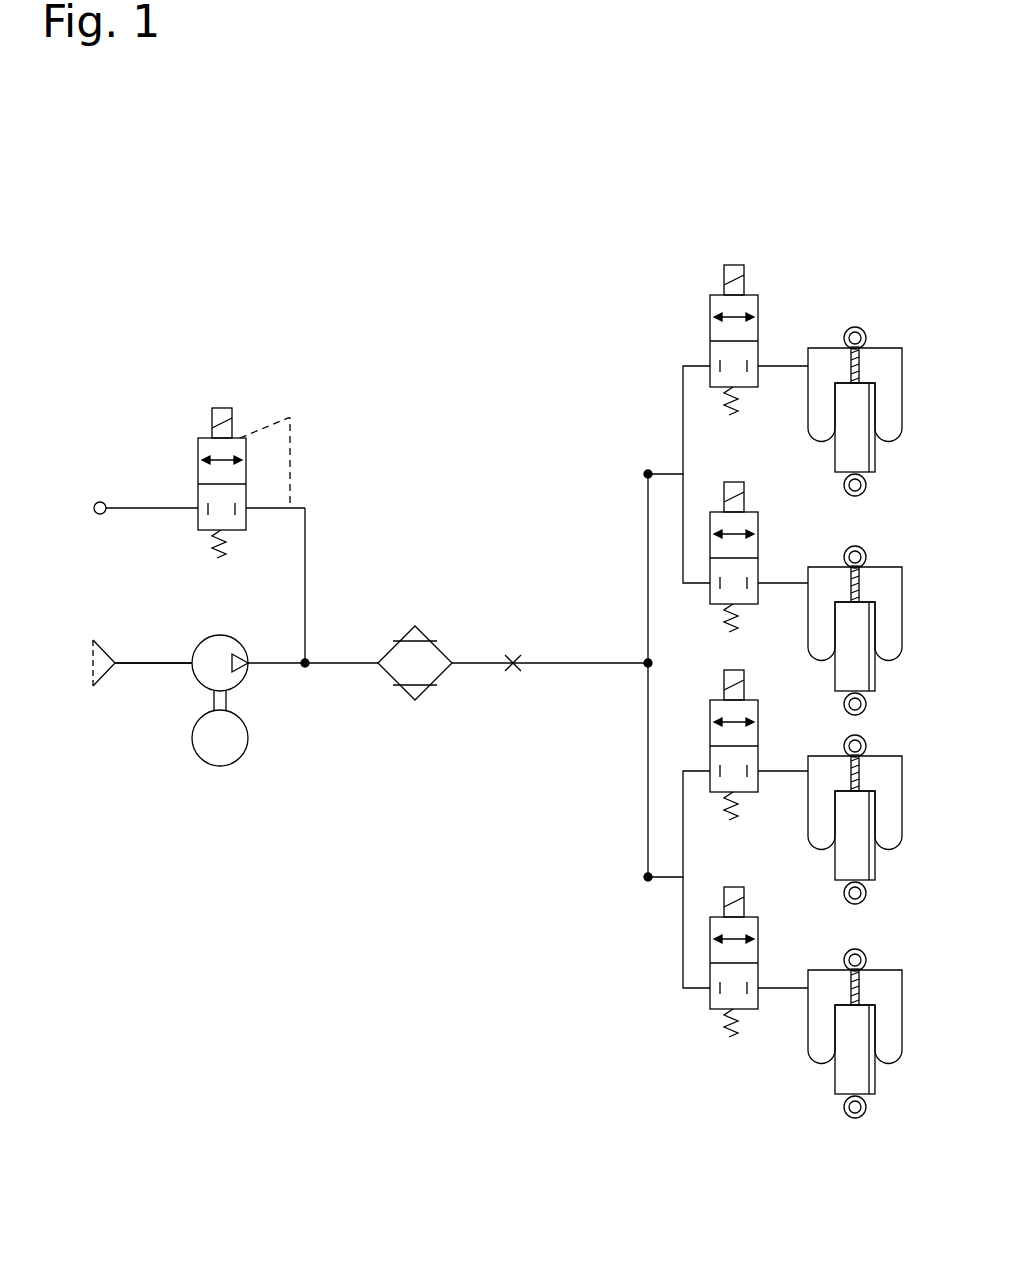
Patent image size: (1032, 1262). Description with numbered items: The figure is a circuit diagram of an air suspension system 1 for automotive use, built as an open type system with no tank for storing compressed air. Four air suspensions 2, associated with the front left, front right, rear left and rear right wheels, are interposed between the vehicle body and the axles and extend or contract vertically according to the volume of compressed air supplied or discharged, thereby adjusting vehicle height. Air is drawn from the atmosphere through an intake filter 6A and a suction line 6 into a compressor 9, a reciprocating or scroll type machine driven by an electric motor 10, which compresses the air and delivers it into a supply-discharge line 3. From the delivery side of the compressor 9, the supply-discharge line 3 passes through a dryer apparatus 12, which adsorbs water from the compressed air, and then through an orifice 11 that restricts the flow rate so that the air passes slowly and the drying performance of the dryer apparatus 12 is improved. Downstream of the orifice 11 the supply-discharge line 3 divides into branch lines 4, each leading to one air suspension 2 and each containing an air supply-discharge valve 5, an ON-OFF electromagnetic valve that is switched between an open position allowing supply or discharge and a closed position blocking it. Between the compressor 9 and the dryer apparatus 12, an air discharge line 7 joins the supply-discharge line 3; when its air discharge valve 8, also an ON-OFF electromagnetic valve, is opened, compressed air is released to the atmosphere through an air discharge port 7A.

The air suspension system 1 is at (388, 270).
The air suspension 2 is at (818, 347).
The supply-discharge line 3 is at (333, 660).
The branch line 4 is at (695, 365).
The air supply-discharge valve 5 is at (719, 292).
The suction line 6 is at (132, 666).
The intake filter 6A is at (102, 684).
The air discharge line 7 is at (156, 512).
The air discharge port 7A is at (100, 501).
The air discharge valve 8 is at (205, 437).
The compressor 9 is at (207, 634).
The electric motor 10 is at (249, 738).
The orifice 11 is at (513, 655).
The dryer apparatus 12 is at (445, 680).